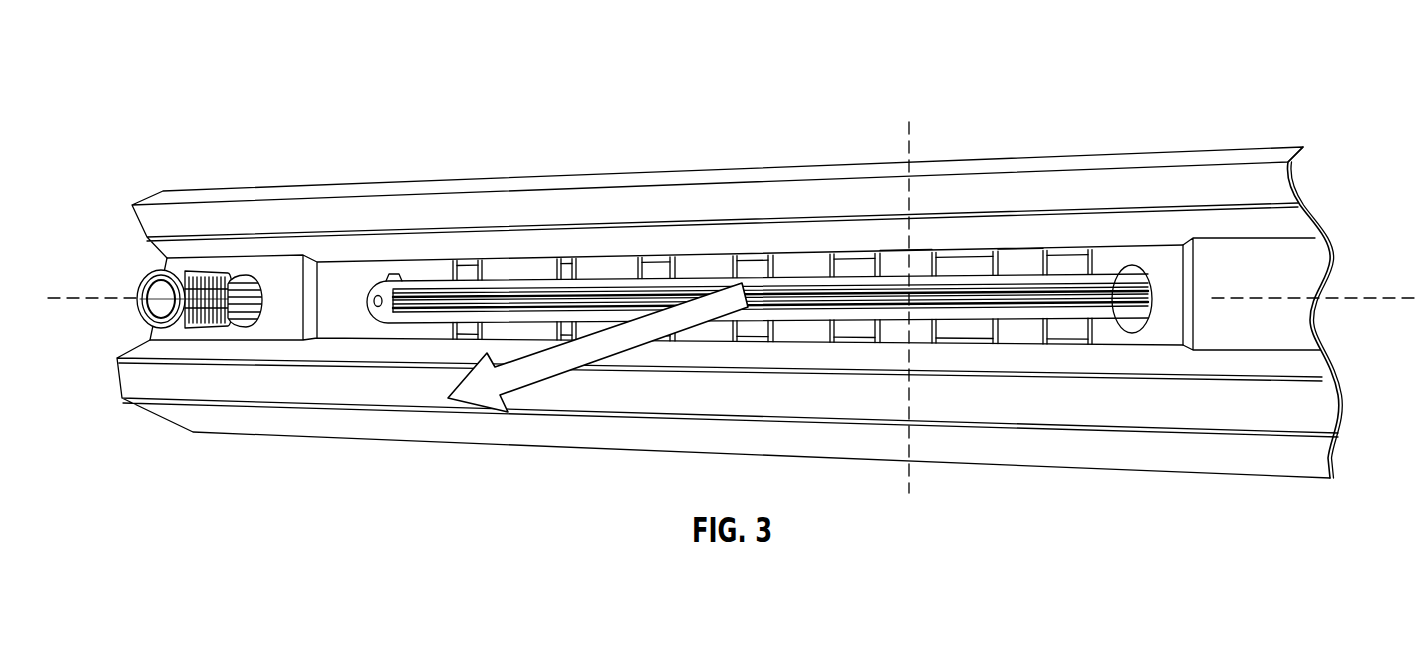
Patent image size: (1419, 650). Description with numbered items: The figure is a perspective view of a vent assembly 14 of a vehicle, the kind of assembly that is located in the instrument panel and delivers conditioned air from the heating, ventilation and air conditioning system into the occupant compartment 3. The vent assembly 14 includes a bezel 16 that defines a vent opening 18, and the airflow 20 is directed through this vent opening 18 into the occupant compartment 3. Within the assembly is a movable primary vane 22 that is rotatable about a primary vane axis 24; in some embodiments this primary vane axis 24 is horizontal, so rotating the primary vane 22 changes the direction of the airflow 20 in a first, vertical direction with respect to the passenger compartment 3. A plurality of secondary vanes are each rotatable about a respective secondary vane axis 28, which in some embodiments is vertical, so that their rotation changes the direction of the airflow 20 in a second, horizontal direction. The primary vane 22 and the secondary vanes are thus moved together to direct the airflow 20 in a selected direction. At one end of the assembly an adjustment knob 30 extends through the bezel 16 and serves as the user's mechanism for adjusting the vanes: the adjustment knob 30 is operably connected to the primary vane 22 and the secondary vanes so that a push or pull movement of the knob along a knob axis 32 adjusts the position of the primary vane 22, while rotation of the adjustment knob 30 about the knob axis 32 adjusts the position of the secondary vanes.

The occupant compartment 3 is at (148, 471).
The vent assembly 14 is at (1175, 72).
The bezel 16 is at (252, 197).
The vent opening 18 is at (603, 268).
The airflow 20 is at (563, 372).
The primary vane 22 is at (1042, 305).
The primary vane axis 24 is at (1353, 297).
The secondary vane axis 28 is at (908, 148).
The adjustment knob 30 is at (147, 264).
The knob axis 32 is at (72, 298).